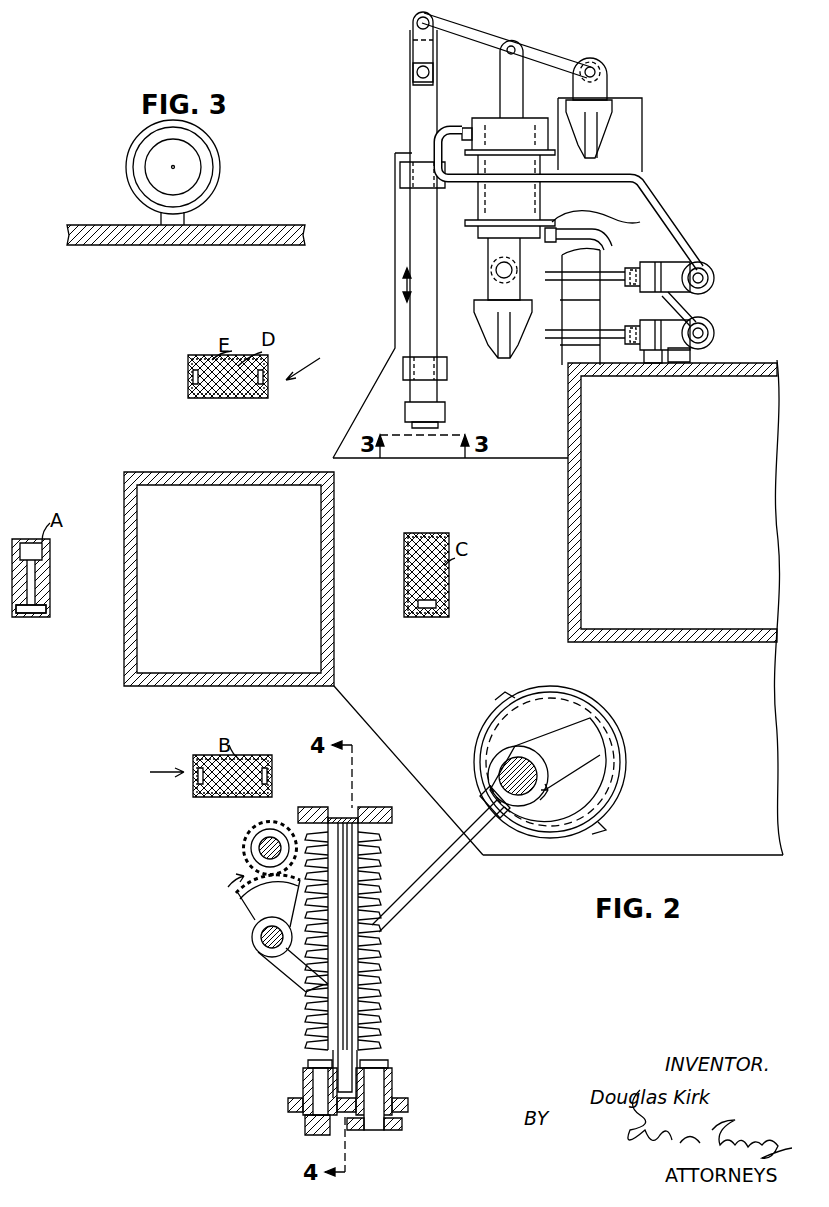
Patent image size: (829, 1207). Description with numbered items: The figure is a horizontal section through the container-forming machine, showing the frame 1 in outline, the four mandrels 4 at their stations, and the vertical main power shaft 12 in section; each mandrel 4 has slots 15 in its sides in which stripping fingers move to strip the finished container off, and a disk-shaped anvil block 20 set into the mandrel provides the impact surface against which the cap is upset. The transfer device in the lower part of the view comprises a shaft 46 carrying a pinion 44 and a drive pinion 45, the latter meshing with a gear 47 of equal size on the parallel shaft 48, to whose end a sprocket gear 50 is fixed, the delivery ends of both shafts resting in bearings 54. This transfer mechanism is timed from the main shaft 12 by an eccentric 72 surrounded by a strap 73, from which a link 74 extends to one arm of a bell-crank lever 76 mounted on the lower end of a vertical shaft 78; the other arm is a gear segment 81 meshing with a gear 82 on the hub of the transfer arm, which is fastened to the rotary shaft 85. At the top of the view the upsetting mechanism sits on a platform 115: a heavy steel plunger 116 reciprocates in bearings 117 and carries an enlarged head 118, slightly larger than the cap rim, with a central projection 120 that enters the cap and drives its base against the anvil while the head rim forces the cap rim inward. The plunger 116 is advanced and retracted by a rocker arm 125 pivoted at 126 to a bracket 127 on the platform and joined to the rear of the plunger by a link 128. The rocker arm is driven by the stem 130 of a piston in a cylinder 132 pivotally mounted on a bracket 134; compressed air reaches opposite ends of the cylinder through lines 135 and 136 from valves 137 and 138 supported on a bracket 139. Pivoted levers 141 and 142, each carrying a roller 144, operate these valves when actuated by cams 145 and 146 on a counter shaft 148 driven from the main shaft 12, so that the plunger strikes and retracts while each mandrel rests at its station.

In FIG. 2, the frame of the machine 1 is at (341, 690).
In FIG. 2, the mandrel 4 is at (48, 578).
In FIG. 2, the main power shaft 12 is at (525, 770).
In FIG. 2, the slot 15 is at (272, 382).
In FIG. 2, the anvil block 20 is at (30, 612).
In FIG. 2, the pinion 44 is at (313, 1130).
In FIG. 2, the drive pinion 45 is at (300, 1106).
In FIG. 2, the shaft 46 is at (318, 1084).
In FIG. 2, the gear 47 is at (406, 1104).
In FIG. 2, the shaft 48 is at (380, 1082).
In FIG. 2, the sprocket gear 50 is at (392, 1130).
In FIG. 2, the bearings 54 is at (385, 818).
In FIG. 2, the eccentric 72 is at (596, 770).
In FIG. 2, the strap 73 is at (624, 776).
In FIG. 2, the link 74 is at (436, 858).
In FIG. 2, the bell-crank lever 76 is at (300, 962).
In FIG. 2, the vertical shaft 78 is at (268, 946).
In FIG. 2, the gear segment 81 is at (238, 895).
In FIG. 2, the gear 82 is at (276, 823).
In FIG. 2, the rotary shaft 85 is at (260, 845).
In FIG. 3, the platform 115 is at (117, 240).
In FIG. 2, the platform 115 is at (398, 256).
In FIG. 2, the plunger 116 is at (428, 276).
In FIG. 3, the bearings 117 is at (205, 194).
In FIG. 2, the bearings 117 is at (432, 190).
In FIG. 3, the enlarged head 118 is at (200, 150).
In FIG. 2, the enlarged head 118 is at (438, 413).
In FIG. 3, the projection 120 is at (185, 176).
In FIG. 2, the projection 120 is at (440, 430).
In FIG. 2, the rocker arm 125 is at (566, 67).
In FIG. 2, the pivot 126 is at (596, 72).
In FIG. 2, the bracket 127 is at (606, 135).
In FIG. 2, the link 128 is at (413, 52).
In FIG. 2, the piston stem 130 is at (513, 90).
In FIG. 2, the cylinder 132 is at (530, 202).
In FIG. 2, the bracket 134 is at (513, 343).
In FIG. 2, the air line 135 is at (672, 245).
In FIG. 2, the air line 136 is at (696, 312).
In FIG. 2, the valve 137 is at (706, 264).
In FIG. 2, the valve 138 is at (713, 342).
In FIG. 2, the bracket 139 is at (690, 356).
In FIG. 2, the pivoted lever 141 is at (592, 306).
In FIG. 2, the pivoted lever 142 is at (650, 355).
In FIG. 2, the roller 144 is at (640, 335).
In FIG. 2, the cam 145 is at (600, 272).
In FIG. 2, the cam 146 is at (578, 340).
In FIG. 2, the counter shaft 148 is at (575, 297).